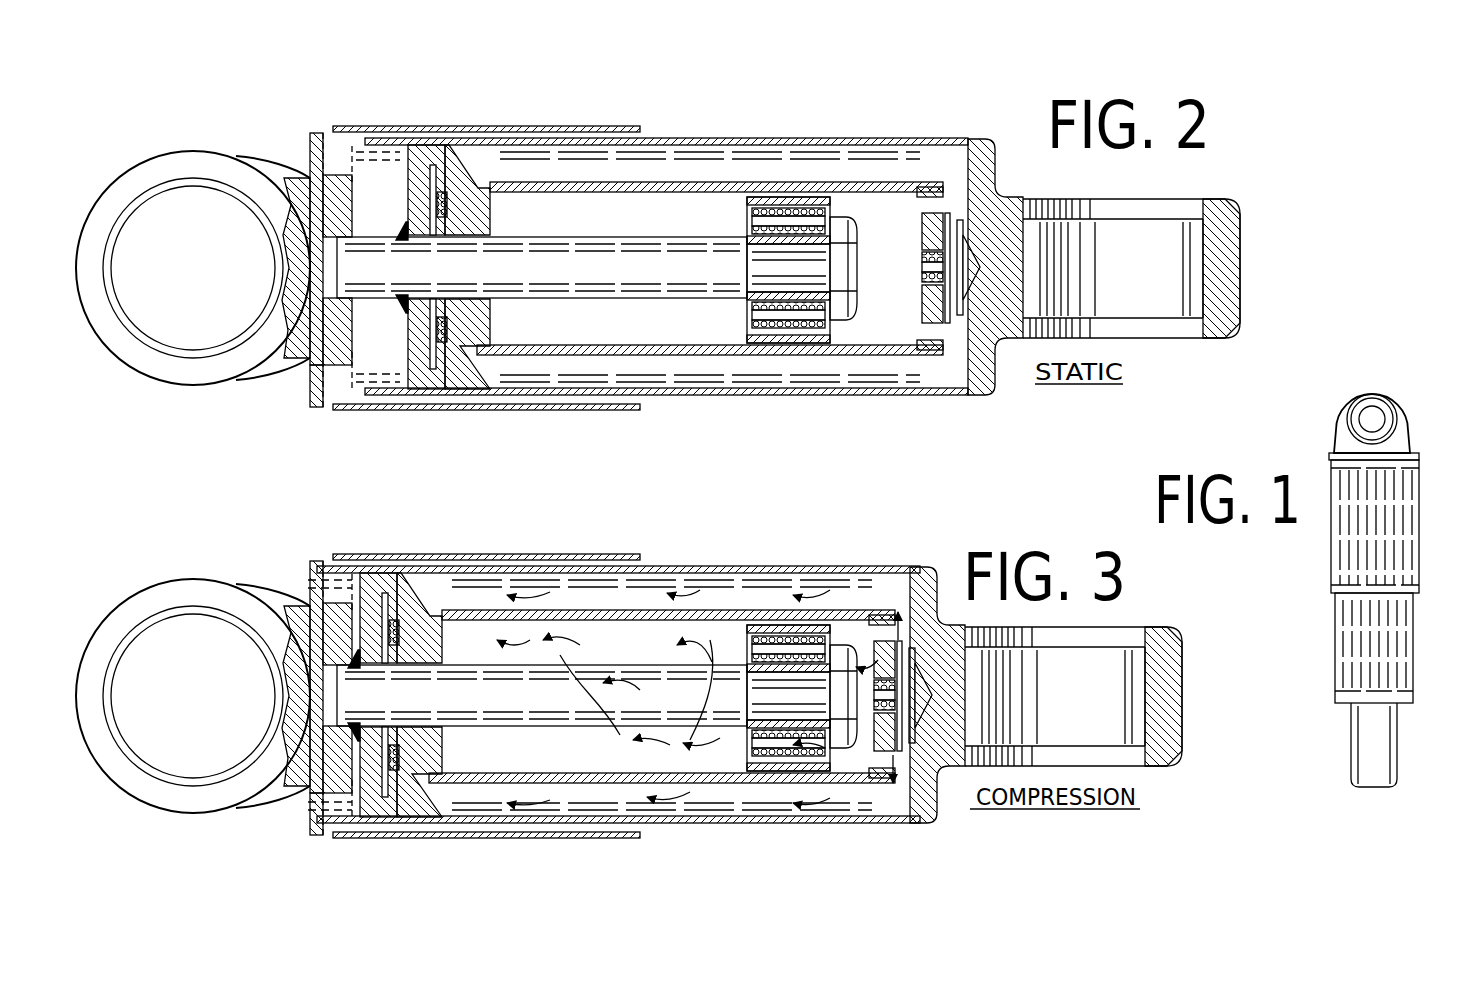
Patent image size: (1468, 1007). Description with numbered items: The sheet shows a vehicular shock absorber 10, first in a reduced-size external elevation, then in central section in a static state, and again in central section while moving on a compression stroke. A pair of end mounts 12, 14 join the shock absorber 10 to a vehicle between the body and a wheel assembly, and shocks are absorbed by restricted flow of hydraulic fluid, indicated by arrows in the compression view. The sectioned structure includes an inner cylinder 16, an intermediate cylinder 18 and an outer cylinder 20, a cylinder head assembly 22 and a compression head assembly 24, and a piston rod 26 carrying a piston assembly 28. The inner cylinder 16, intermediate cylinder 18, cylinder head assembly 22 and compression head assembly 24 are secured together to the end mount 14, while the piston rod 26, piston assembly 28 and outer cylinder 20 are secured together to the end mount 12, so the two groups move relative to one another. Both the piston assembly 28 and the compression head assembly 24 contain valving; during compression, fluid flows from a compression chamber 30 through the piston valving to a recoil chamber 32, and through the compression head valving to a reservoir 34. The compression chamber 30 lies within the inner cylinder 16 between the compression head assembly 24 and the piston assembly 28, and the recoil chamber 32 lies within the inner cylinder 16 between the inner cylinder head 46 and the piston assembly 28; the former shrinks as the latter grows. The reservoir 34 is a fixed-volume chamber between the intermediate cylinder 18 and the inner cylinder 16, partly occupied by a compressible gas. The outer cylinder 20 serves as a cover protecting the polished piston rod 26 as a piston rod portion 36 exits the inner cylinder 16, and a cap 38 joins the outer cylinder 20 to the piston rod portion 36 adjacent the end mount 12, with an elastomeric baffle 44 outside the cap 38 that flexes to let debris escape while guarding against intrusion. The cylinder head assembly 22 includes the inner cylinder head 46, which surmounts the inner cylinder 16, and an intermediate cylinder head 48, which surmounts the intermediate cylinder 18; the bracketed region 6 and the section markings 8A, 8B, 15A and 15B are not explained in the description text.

In FIG. 2, the rod guide and seal assembly 6 is at (467, 268).
In FIG. 2, the reservoir chamber section 8A is at (719, 135).
In FIG. 2, the reservoir chamber section 8B is at (842, 135).
In FIG. 1, the shock absorber 10 is at (1422, 550).
In FIG. 2, the end mount 12 is at (181, 371).
In FIG. 1, the end mount 12 is at (1404, 401).
In FIG. 2, the end mount 14 is at (1241, 267).
In FIG. 1, the end mount 14 is at (1397, 741).
In FIG. 2, the chamber section 15A is at (915, 135).
In FIG. 2, the end chamber section 15B is at (996, 136).
In FIG. 2, the inner cylinder 16 is at (704, 347).
In FIG. 2, the intermediate cylinder 18 is at (664, 396).
In FIG. 2, the outer cylinder 20 is at (552, 408).
In FIG. 2, the cylinder head assembly 22 is at (405, 173).
In FIG. 2, the compression head assembly 24 is at (944, 366).
In FIG. 2, the piston rod 26 is at (582, 265).
In FIG. 2, the piston assembly 28 is at (838, 332).
In FIG. 3, the compression chamber 30 is at (842, 637).
In FIG. 3, the recoil chamber 32 is at (692, 760).
In FIG. 3, the reservoir 34 is at (770, 797).
In FIG. 2, the piston rod portion 36 is at (309, 372).
In FIG. 2, the cap 38 is at (314, 178).
In FIG. 2, the baffle 44 is at (313, 374).
In FIG. 2, the inner cylinder head 46 is at (470, 190).
In FIG. 2, the intermediate cylinder head 48 is at (420, 162).